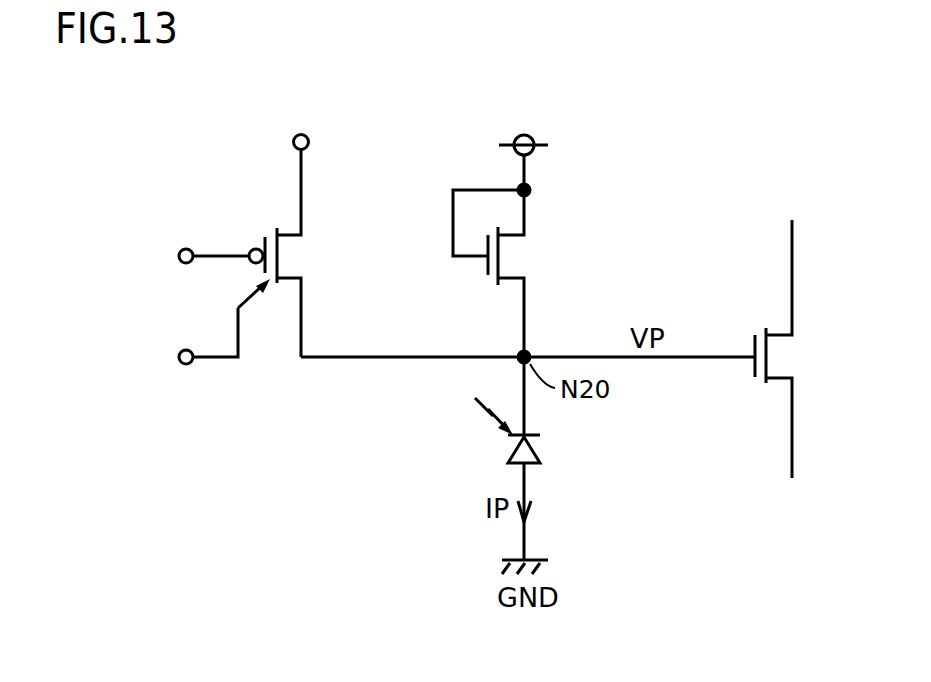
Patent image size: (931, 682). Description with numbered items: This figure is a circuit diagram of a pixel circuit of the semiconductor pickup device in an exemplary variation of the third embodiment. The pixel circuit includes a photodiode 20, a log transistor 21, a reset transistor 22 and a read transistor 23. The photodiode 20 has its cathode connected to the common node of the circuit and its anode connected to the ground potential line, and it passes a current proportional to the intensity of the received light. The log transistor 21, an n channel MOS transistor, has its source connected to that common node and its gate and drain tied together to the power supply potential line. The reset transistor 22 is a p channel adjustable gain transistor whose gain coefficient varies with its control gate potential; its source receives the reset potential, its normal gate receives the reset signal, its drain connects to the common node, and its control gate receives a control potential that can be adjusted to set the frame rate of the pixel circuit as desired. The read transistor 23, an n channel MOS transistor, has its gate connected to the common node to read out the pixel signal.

The photodiode 20 is at (542, 446).
The log transistor 21 is at (513, 281).
The reset transistor 22 is at (290, 228).
The read transistor 23 is at (790, 331).